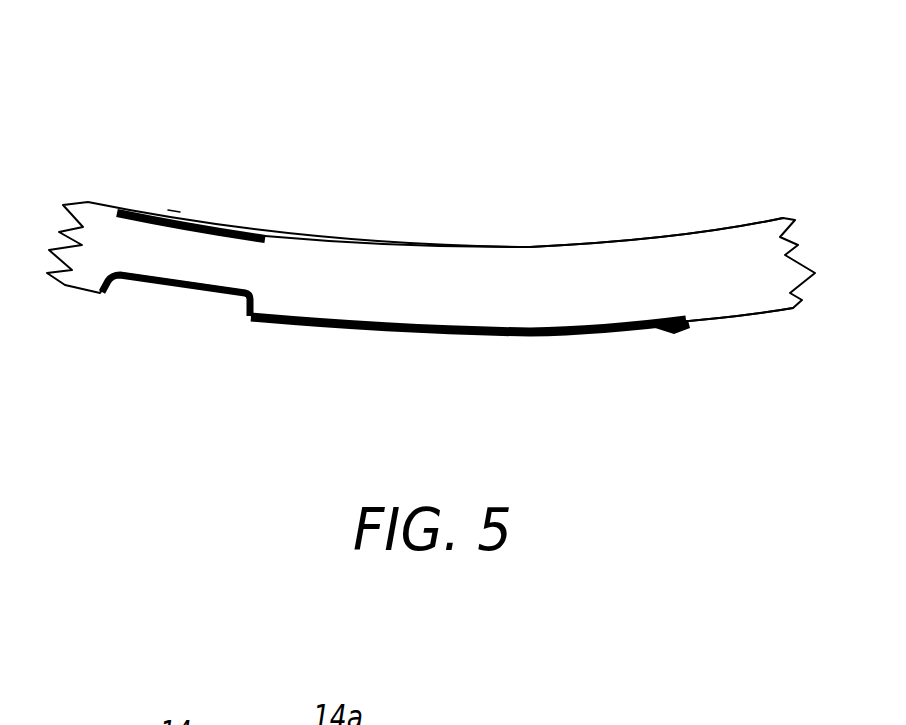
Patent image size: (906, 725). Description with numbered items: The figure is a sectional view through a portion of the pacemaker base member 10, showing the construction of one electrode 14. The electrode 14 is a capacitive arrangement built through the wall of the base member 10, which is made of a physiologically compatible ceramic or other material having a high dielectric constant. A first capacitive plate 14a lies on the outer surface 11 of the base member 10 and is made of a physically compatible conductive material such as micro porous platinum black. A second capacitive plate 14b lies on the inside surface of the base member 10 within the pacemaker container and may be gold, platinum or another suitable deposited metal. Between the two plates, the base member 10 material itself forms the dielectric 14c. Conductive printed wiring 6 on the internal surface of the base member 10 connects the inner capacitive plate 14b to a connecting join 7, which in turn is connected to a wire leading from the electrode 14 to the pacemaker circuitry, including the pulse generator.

The electrode 14 is at (421, 173).
The first capacitive plate 14a is at (243, 230).
The second capacitive plate 14b is at (163, 284).
The dielectric 14c is at (173, 258).
The base member 10 is at (640, 283).
The outer surface 11 is at (720, 230).
The conductive printed wiring 6 is at (445, 336).
The connecting join 7 is at (663, 332).